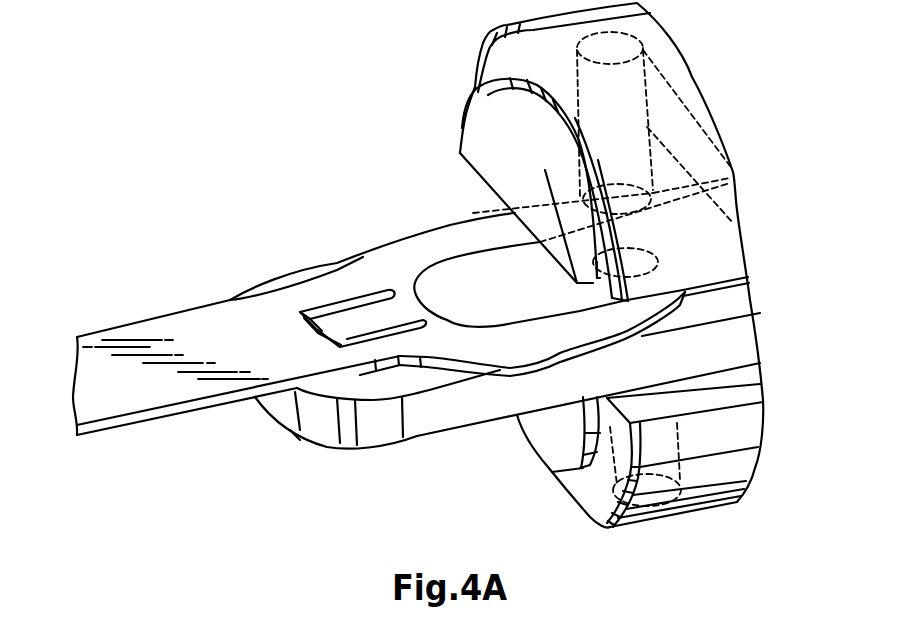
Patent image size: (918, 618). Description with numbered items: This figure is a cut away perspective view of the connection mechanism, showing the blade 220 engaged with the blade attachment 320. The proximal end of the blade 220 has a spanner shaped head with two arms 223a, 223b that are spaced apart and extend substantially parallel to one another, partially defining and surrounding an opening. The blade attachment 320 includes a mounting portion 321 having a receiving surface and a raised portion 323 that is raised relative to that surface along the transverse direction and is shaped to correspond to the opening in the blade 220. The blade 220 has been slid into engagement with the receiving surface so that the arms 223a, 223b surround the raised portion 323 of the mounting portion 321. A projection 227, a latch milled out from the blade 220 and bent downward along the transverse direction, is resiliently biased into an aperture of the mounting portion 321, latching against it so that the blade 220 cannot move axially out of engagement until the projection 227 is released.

The blade 220 is at (198, 333).
The arm 223a is at (417, 245).
The arm 223b is at (587, 333).
The projection 227 is at (332, 318).
The blade attachment 320 is at (312, 427).
The mounting portion 321 is at (417, 417).
The raised portion 323 is at (492, 310).